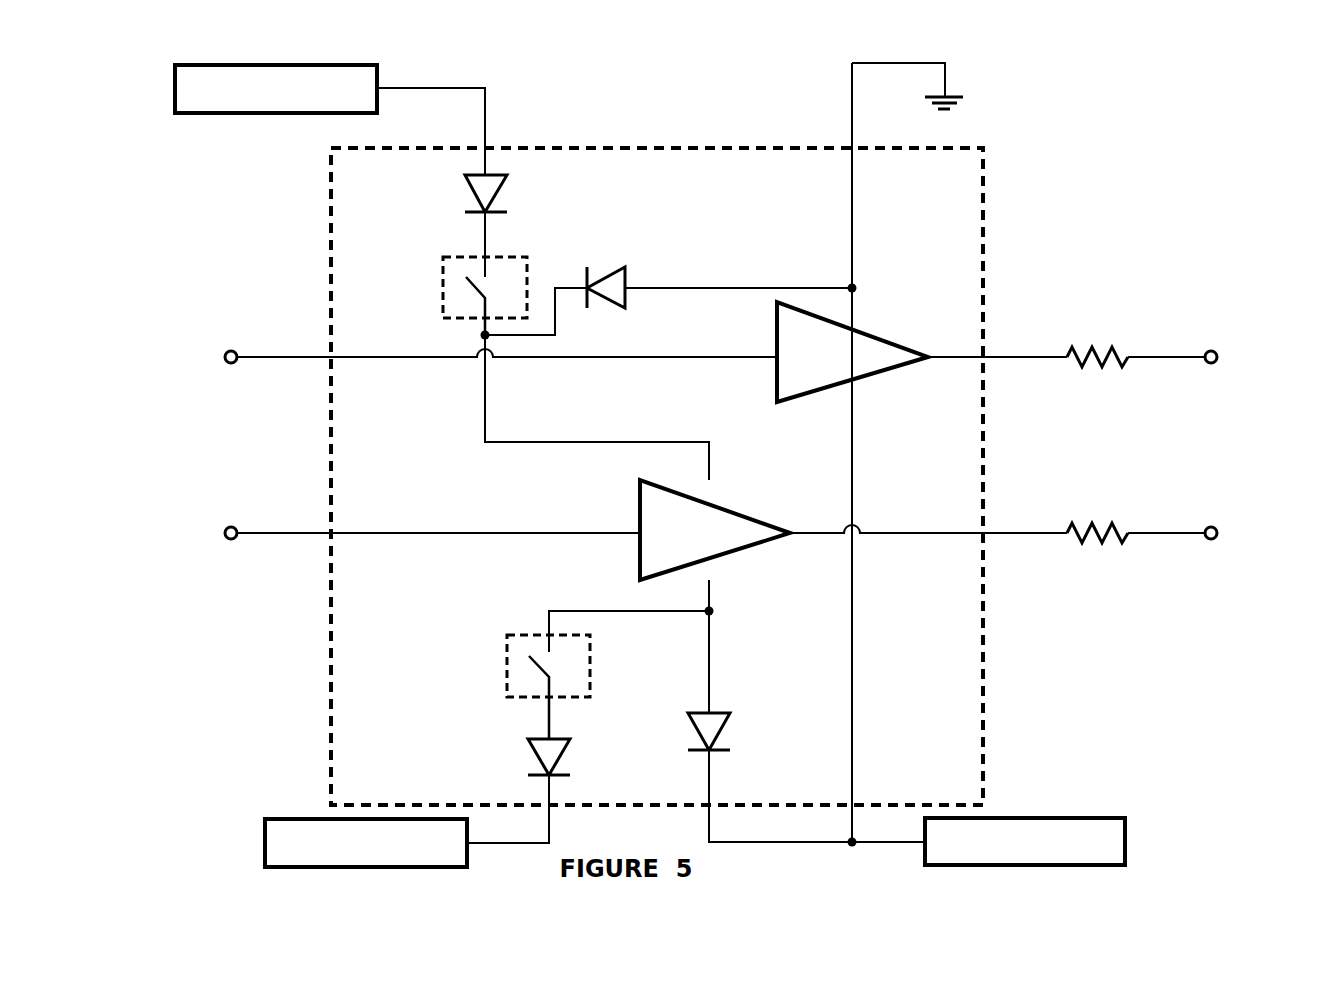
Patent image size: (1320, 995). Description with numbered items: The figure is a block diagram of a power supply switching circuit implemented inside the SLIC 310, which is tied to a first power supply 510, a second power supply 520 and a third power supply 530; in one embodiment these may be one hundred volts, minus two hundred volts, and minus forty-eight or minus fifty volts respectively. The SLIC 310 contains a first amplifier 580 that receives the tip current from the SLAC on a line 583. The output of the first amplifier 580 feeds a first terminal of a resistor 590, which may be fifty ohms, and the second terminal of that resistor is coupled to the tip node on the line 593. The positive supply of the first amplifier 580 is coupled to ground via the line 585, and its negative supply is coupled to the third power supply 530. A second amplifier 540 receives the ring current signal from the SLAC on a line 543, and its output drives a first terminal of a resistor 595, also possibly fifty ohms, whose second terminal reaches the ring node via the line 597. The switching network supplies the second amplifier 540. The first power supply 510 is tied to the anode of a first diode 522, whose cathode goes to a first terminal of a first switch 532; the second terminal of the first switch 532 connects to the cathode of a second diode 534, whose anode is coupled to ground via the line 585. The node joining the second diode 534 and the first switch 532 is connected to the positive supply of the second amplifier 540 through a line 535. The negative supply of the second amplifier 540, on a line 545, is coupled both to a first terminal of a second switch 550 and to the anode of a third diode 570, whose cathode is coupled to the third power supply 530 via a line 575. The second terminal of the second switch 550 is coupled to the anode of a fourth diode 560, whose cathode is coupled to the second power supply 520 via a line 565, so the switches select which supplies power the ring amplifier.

The SLIC 310 is at (655, 148).
The first power supply 510 is at (275, 113).
The second power supply 520 is at (305, 818).
The third power supply 530 is at (1062, 818).
The first diode 522 is at (472, 213).
The first switch 532 is at (510, 255).
The second diode 534 is at (622, 263).
The line 535 is at (572, 442).
The second amplifier 540 is at (757, 515).
The line 543 is at (430, 538).
The line 545 is at (712, 636).
The second switch 550 is at (507, 657).
The fourth diode 560 is at (530, 750).
The line 565 is at (548, 797).
The third diode 570 is at (728, 727).
The line 575 is at (712, 790).
The first amplifier 580 is at (890, 342).
The line 583 is at (455, 360).
The line 585 is at (852, 233).
The resistor 590 is at (1111, 339).
The line 593 is at (1189, 350).
The resistor 595 is at (1111, 513).
The line 597 is at (1189, 538).